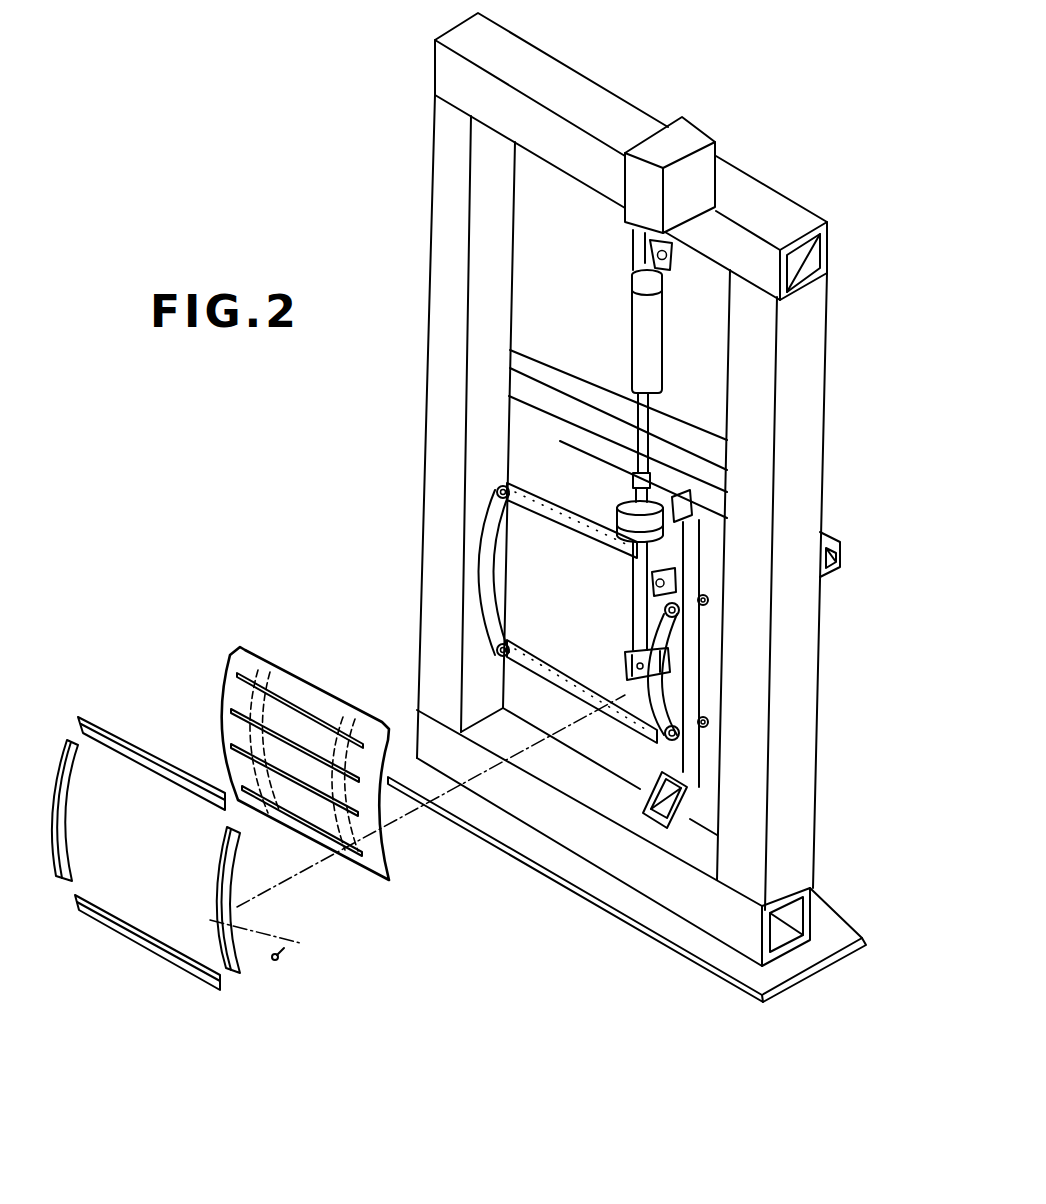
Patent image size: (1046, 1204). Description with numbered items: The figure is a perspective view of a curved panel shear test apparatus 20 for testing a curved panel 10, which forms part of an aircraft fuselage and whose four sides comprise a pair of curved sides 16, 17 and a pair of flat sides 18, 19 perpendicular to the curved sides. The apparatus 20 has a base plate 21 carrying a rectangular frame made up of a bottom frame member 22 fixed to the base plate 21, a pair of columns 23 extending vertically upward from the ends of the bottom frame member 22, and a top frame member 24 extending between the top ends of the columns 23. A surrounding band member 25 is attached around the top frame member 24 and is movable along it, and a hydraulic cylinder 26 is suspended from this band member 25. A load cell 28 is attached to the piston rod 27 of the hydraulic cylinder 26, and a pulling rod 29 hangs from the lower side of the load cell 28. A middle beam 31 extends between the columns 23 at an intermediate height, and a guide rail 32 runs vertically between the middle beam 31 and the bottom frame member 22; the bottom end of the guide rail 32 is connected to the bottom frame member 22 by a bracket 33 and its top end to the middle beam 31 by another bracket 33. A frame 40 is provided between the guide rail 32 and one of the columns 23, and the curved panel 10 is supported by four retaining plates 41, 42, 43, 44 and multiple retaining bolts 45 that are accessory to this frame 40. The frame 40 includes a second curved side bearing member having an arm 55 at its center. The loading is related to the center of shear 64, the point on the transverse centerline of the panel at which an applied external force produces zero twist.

The curved panel 10 is at (255, 640).
The curved side 16 is at (380, 810).
The curved side 17 is at (230, 690).
The flat side 18 is at (318, 690).
The flat side 19 is at (328, 868).
The curved panel shear test apparatus 20 is at (345, 182).
The base plate 21 is at (583, 895).
The bottom frame member 22 is at (578, 828).
The column 23 is at (445, 440).
The top frame member 24 is at (597, 107).
The surrounding band member 25 is at (680, 143).
The hydraulic cylinder 26 is at (645, 328).
The piston rod 27 is at (645, 408).
The load cell 28 is at (623, 505).
The pulling rod 29 is at (638, 612).
The middle beam 31 is at (687, 462).
The guide rail 32 is at (650, 658).
The bracket 33 is at (680, 497).
The frame 40 is at (587, 523).
The retaining plate 41 is at (45, 867).
The retaining plate 42 is at (135, 745).
The retaining plate 43 is at (233, 873).
The retaining plate 44 is at (143, 947).
The retaining bolt 45 is at (277, 959).
The arm 55 is at (692, 688).
The center of shear 64 is at (633, 685).